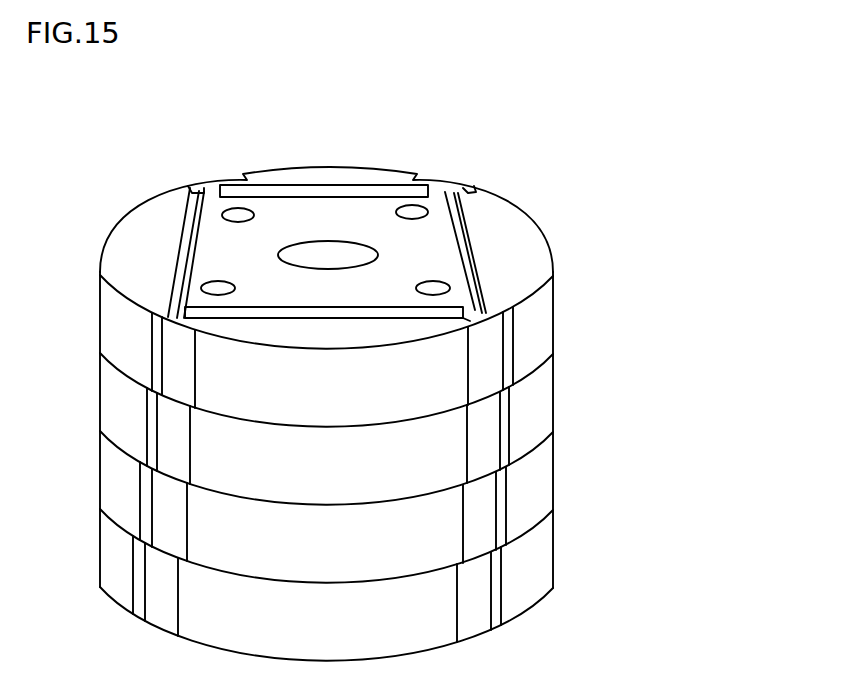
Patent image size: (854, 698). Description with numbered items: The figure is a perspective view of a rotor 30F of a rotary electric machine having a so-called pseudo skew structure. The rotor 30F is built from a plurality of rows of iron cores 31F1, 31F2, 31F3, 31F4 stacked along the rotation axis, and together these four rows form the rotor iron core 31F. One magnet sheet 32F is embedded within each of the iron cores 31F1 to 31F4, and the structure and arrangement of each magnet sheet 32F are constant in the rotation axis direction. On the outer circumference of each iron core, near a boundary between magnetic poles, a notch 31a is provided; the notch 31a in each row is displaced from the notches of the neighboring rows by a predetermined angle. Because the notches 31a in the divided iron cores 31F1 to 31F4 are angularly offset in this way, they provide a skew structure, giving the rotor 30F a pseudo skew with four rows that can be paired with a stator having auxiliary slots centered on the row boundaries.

The rotor 30F is at (567, 164).
The magnet sheet 32F is at (348, 190).
The notch 31a is at (490, 350).
The rotor iron core 31F is at (727, 305).
The iron core 31F1 is at (547, 333).
The iron core 31F2 is at (547, 407).
The iron core 31F3 is at (547, 470).
The iron core 31F4 is at (553, 557).